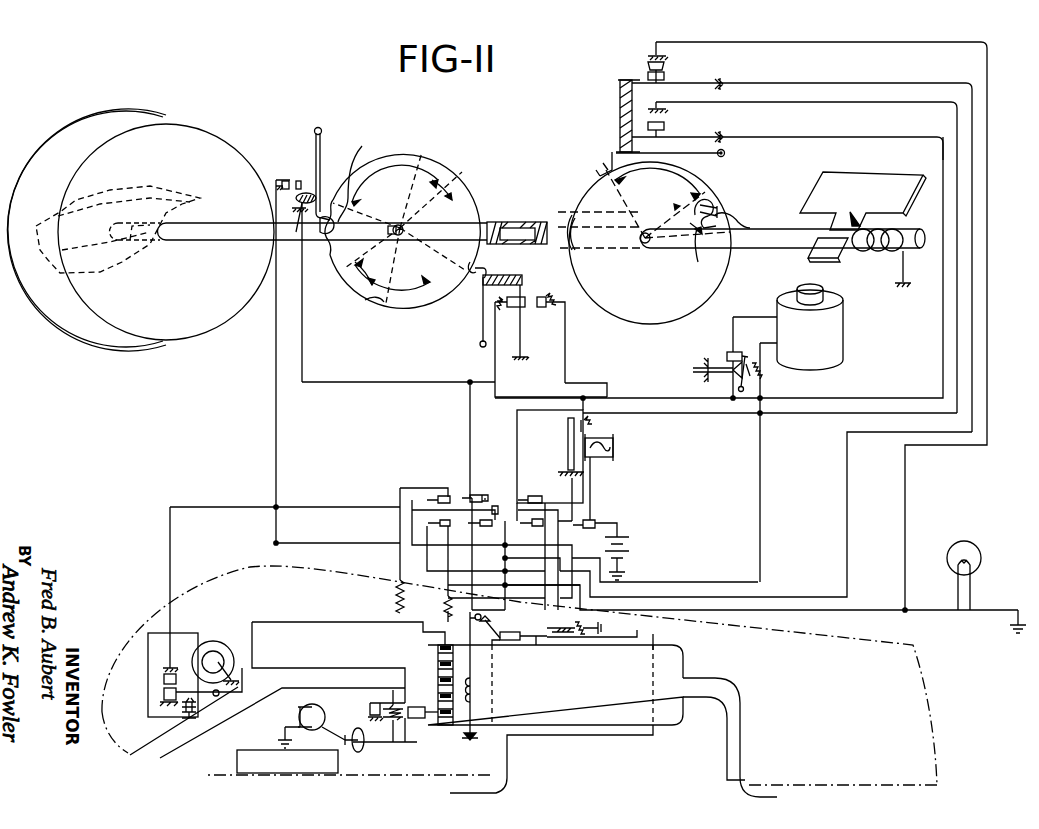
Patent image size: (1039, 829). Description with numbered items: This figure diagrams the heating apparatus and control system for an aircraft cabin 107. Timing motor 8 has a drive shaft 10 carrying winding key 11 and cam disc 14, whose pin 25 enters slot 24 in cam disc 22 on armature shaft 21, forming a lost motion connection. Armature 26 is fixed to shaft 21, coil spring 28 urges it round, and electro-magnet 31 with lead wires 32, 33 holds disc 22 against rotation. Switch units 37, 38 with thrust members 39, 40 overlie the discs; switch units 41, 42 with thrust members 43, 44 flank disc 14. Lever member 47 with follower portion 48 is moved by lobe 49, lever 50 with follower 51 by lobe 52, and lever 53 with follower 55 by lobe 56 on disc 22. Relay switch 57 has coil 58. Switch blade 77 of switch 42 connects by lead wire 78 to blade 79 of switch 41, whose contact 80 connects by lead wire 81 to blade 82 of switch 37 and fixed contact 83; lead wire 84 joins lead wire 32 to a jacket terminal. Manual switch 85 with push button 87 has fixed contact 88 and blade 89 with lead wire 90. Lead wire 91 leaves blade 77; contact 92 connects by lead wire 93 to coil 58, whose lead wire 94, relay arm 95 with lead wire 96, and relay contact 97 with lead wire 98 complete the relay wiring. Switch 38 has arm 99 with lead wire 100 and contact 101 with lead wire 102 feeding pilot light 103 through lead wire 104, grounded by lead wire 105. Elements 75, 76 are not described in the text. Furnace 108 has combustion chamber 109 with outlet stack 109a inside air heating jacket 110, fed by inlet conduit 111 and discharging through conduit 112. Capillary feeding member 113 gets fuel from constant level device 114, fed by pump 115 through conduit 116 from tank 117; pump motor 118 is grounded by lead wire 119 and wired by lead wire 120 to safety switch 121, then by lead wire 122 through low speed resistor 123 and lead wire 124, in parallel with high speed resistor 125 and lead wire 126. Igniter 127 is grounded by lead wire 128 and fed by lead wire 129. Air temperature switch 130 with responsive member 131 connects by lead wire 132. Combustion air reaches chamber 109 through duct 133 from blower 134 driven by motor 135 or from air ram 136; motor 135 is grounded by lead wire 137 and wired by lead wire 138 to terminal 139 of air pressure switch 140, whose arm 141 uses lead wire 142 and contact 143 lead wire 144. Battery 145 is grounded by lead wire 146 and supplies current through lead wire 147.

The wheel 8 is at (174, 332).
The shaft 10 is at (192, 246).
The vehicle body outline 11 is at (126, 186).
The cam disc 14 is at (405, 152).
The shaft 21 is at (766, 250).
The disc 22 is at (632, 316).
The pawl arm 24 is at (699, 248).
The pawl 25 is at (713, 205).
The plate 26 is at (822, 186).
The coil spring 28 is at (878, 254).
The solenoid canister 31 is at (843, 326).
The conductor 32 is at (857, 106).
The conductor 33 is at (732, 330).
The contact direction 37 is at (670, 120).
The contact direction 38 is at (632, 60).
The bar end 39 is at (618, 138).
The insulating bar 40 is at (618, 101).
The bearing 41 is at (538, 278).
The bracket 42 is at (273, 172).
The bearing block 43 is at (502, 275).
The contact 44 is at (307, 190).
The lever 47 is at (322, 145).
The follower 48 is at (322, 236).
The follower arm 49 is at (351, 180).
The link 50 is at (481, 320).
The notch 51 is at (470, 272).
The notch 52 is at (372, 302).
The link 53 is at (670, 154).
The pawl 55 is at (596, 168).
The disc lobe 56 is at (740, 222).
The arrow direction 57 is at (566, 446).
The solenoid coil 58 is at (612, 457).
The conductor 75 is at (358, 541).
The contact 76 is at (285, 178).
The conductor 77 is at (294, 240).
The conductor 78 is at (302, 313).
The ground conductor 79 is at (522, 336).
The contact 80 is at (511, 308).
The conductor 81 is at (494, 355).
The contact 82 is at (725, 133).
The contact 83 is at (795, 247).
The conductor 84 is at (760, 494).
The arrow direction 85 is at (724, 382).
The plunger 87 is at (693, 368).
The contact 88 is at (726, 355).
The lever 89 is at (746, 356).
The conductor 90 is at (742, 416).
The conductor 91 is at (471, 445).
The contact 92 is at (543, 296).
The conductor 93 is at (567, 366).
The conductor 94 is at (591, 492).
The relay housing 95 is at (550, 456).
The pivot 96 is at (563, 480).
The armature 97 is at (567, 420).
The conductor 98 is at (575, 398).
The contact 99 is at (712, 80).
The conductor 100 is at (912, 86).
The contact 101 is at (652, 55).
The conductor 102 is at (852, 44).
The lamp 103 is at (977, 548).
The conductor 104 is at (930, 608).
The ground 105 is at (996, 609).
The vehicle outline 107 is at (782, 642).
The outlet pipe 108 is at (670, 730).
The tank 109 is at (585, 694).
The pipe 109a is at (742, 716).
The conduit 110 is at (570, 736).
The conduit 111 is at (500, 792).
The conductor 112 is at (650, 637).
The rack 113 is at (450, 727).
The spring 114 is at (418, 720).
The bellows 115 is at (372, 750).
The valve 116 is at (396, 745).
The reservoir 117 is at (236, 760).
The pulley 118 is at (299, 716).
The ground 119 is at (284, 738).
The pedal arm 120 is at (362, 698).
The contact 121 is at (372, 700).
The conductor 122 is at (404, 656).
The resistor 123 is at (398, 597).
The switch bank 124 is at (400, 494).
The resistor 125 is at (446, 604).
The conductor 126 is at (448, 575).
The coil 127 is at (478, 700).
The ground 128 is at (473, 738).
The conductor 129 is at (469, 638).
The switch arm 130 is at (560, 640).
The contact 131 is at (514, 641).
The spring 132 is at (603, 629).
The conductor 133 is at (322, 667).
The gauge 134 is at (223, 642).
The gauge pointer 135 is at (211, 642).
The floor 136 is at (162, 748).
The ground 137 is at (235, 660).
The contact 138 is at (163, 680).
The lever 139 is at (160, 699).
The spring 140 is at (203, 708).
The housing 141 is at (176, 675).
The conductor 142 is at (277, 622).
The contact 143 is at (163, 668).
The conductor 144 is at (205, 507).
The battery 145 is at (630, 543).
The ground 146 is at (626, 571).
The conductor 147 is at (618, 522).